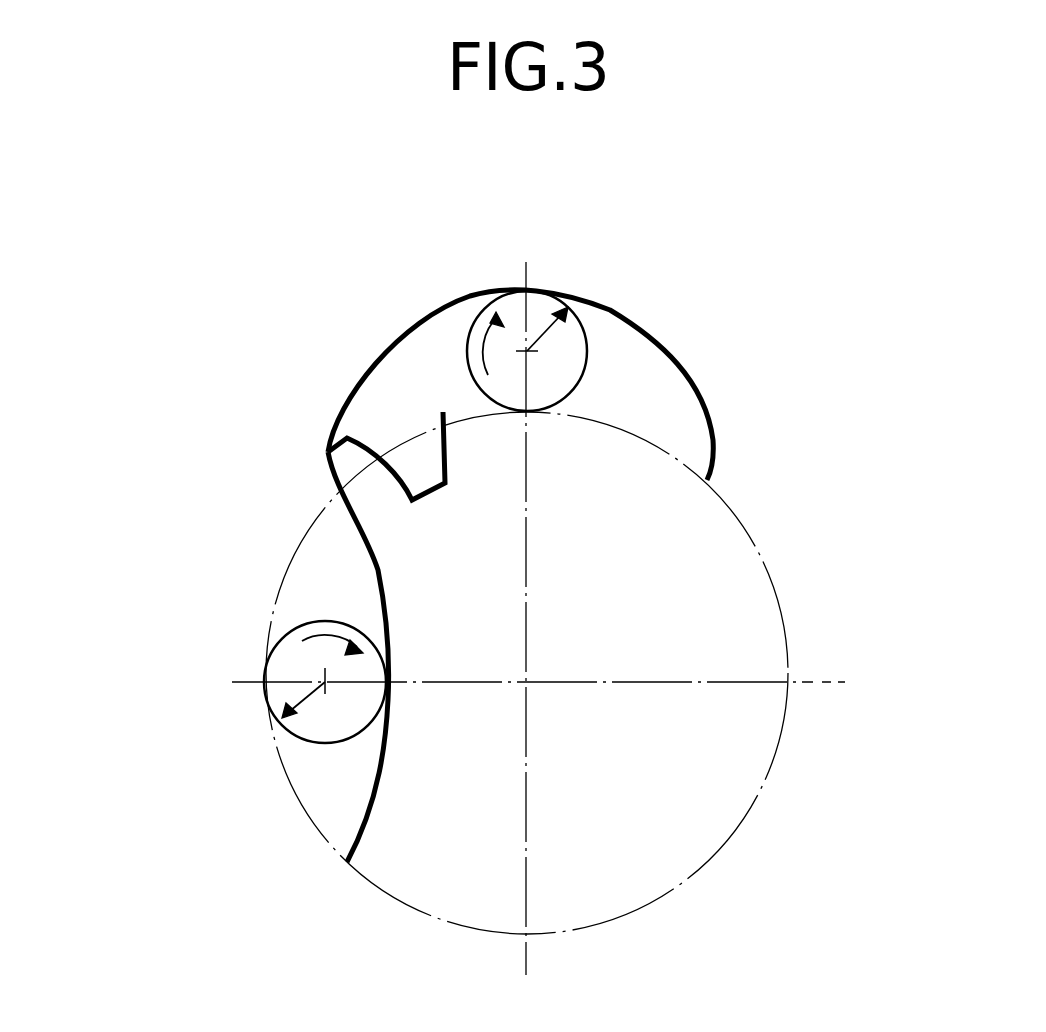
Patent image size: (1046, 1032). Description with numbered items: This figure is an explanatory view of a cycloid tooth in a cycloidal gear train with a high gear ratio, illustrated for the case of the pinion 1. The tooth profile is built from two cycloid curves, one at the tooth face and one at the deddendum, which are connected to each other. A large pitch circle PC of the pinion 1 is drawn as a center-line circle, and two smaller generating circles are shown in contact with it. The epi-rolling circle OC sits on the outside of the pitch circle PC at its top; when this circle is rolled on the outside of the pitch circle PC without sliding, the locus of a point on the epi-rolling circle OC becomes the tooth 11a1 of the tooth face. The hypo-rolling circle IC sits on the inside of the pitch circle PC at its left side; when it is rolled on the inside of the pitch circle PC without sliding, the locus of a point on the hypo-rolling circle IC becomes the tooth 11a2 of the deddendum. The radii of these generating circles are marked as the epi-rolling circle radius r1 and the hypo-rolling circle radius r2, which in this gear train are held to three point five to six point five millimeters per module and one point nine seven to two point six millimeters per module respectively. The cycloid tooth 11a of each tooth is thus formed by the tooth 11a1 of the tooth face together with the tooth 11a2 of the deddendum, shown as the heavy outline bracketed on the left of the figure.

The pinion 1 is at (826, 387).
The cycloid tooth 11a is at (118, 435).
The tooth of the tooth face 11a1 is at (332, 471).
The tooth of the deddendum 11a2 is at (358, 538).
The epi-rolling circle OC is at (587, 332).
The hypo-rolling circle IC is at (297, 743).
The pitch circle PC is at (787, 604).
The epi-rolling circle radius r1 is at (537, 333).
The hypo-rolling circle radius r2 is at (293, 695).